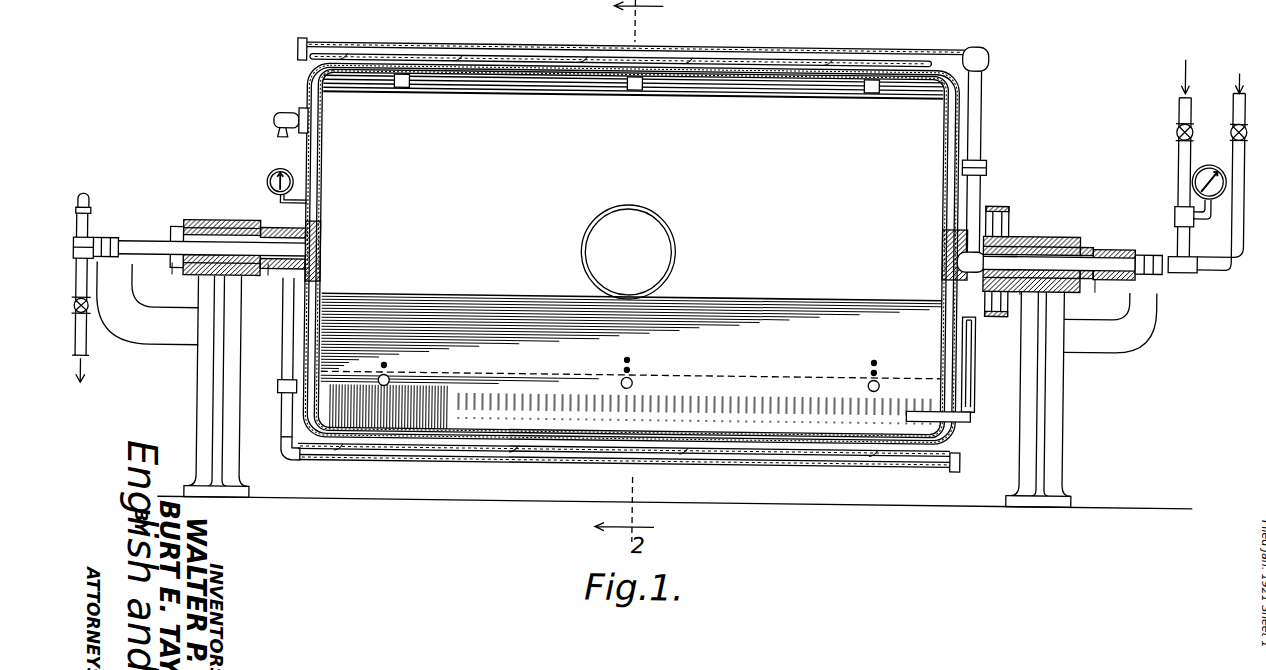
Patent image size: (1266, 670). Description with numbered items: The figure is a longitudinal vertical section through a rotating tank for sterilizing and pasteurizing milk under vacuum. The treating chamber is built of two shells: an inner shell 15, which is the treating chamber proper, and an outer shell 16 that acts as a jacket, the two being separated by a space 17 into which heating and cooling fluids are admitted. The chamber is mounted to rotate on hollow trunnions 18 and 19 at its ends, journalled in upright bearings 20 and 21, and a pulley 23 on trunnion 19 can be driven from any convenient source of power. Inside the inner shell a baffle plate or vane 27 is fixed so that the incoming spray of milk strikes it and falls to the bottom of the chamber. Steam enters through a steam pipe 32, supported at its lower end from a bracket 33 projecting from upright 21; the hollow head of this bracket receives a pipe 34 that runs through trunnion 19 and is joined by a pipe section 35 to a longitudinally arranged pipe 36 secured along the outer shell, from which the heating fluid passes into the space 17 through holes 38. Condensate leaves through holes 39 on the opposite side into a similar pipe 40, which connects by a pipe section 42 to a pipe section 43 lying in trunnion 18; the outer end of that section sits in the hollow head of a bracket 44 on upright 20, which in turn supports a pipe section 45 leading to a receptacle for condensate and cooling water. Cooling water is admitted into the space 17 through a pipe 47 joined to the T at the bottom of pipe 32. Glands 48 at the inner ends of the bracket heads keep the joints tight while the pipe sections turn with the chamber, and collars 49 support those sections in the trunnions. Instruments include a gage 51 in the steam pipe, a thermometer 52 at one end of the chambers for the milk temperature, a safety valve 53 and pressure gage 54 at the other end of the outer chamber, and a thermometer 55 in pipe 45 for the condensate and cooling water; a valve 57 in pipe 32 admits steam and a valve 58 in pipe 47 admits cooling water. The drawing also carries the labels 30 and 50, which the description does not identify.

The inner shell 15 is at (935, 133).
The outer shell 16 is at (945, 139).
The space 17 is at (950, 180).
The hollow trunnion 18 is at (273, 234).
The hollow trunnion 19 is at (943, 283).
The upright bearing 20 is at (202, 385).
The upright bearing 21 is at (1055, 377).
The pulley 23 is at (1000, 204).
The baffle plate or vane 27 is at (745, 304).
The heating element 30 is at (752, 85).
The steam pipe 32 is at (1177, 148).
The bracket 33 is at (1135, 304).
The pipe 34 is at (1095, 251).
The pipe section 35 is at (980, 84).
The longitudinally-arranged pipe 36 is at (730, 37).
The holes 38 is at (523, 58).
The holes 39 is at (513, 451).
The pipe 40 is at (802, 460).
The pipe section 42 is at (283, 364).
The pipe section 43 is at (202, 254).
The bracket 44 is at (142, 328).
The pipe section 45 is at (83, 254).
The pipe 47 is at (1237, 226).
The gland 48 is at (158, 243).
The collars 49 is at (172, 273).
The drum 50 is at (628, 251).
The gage 51 is at (1197, 178).
The thermometer 52 is at (972, 394).
The safety valve 53 is at (293, 104).
The pressure gage 54 is at (275, 174).
The thermometer 55 is at (88, 212).
The valve 57 is at (1177, 121).
The valve 58 is at (1232, 125).